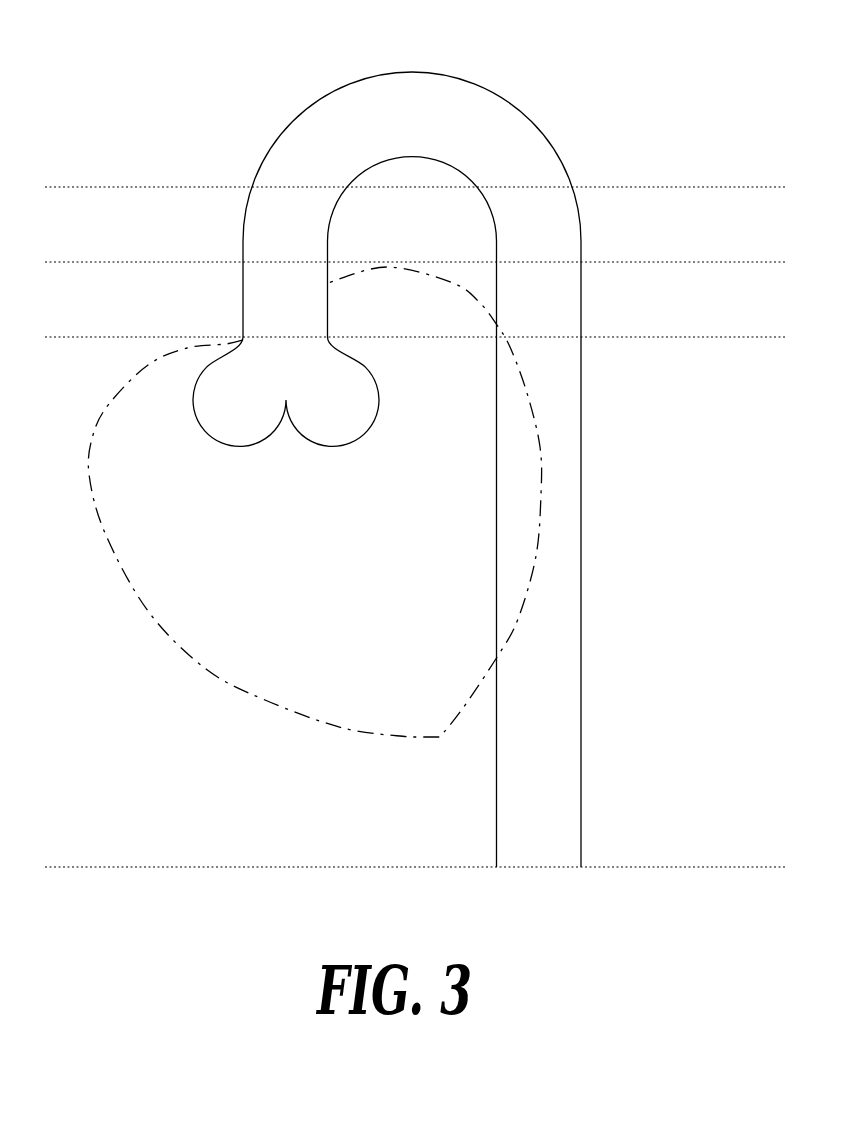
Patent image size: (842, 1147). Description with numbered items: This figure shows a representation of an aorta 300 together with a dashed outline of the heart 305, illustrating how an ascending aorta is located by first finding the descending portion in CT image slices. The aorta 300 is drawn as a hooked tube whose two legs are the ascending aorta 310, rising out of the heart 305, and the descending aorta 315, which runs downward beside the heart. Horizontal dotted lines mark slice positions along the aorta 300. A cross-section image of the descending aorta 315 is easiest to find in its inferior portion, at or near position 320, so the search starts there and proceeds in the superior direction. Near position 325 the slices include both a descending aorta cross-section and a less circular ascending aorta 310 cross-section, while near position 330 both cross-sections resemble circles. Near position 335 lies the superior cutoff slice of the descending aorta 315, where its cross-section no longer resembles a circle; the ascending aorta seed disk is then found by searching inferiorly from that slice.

The aorta 300 is at (421, 443).
The heart 305 is at (213, 664).
The ascending aorta 310 is at (265, 163).
The descending aorta 315 is at (582, 553).
The position 320 is at (92, 867).
The position 325 is at (92, 337).
The position 330 is at (92, 262).
The position 335 is at (92, 187).